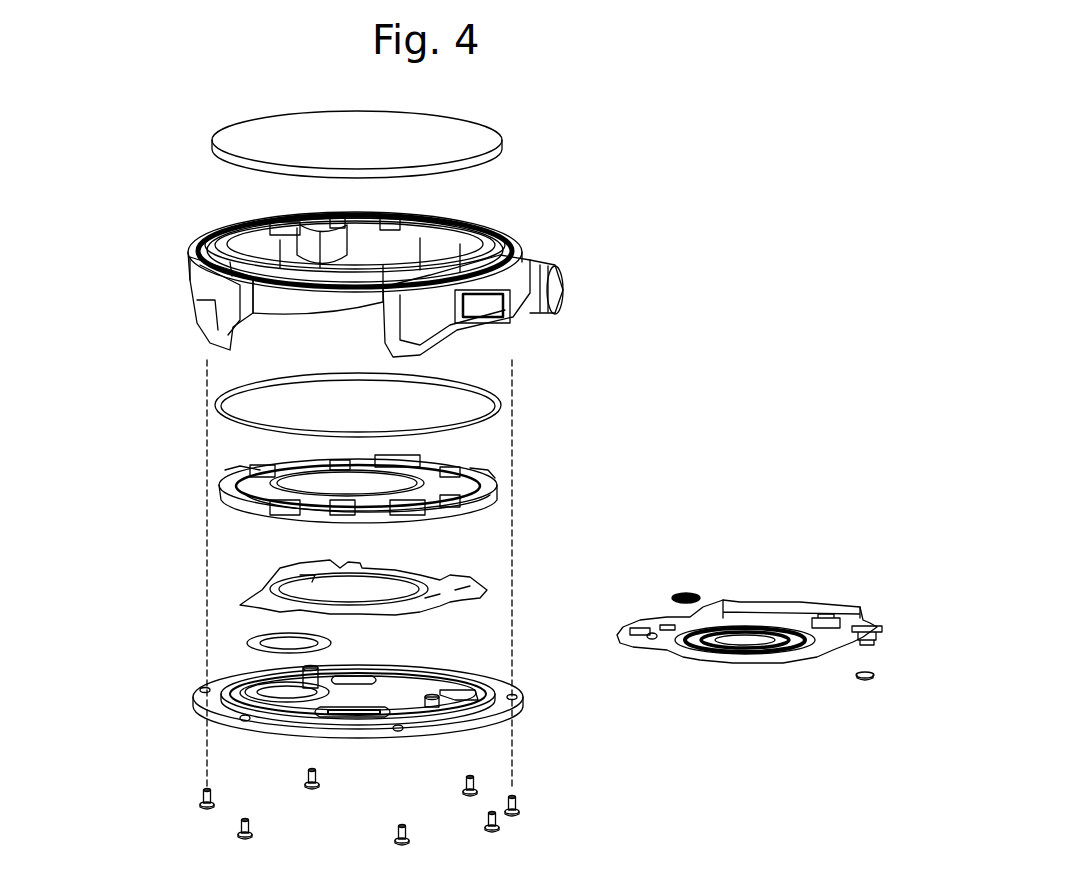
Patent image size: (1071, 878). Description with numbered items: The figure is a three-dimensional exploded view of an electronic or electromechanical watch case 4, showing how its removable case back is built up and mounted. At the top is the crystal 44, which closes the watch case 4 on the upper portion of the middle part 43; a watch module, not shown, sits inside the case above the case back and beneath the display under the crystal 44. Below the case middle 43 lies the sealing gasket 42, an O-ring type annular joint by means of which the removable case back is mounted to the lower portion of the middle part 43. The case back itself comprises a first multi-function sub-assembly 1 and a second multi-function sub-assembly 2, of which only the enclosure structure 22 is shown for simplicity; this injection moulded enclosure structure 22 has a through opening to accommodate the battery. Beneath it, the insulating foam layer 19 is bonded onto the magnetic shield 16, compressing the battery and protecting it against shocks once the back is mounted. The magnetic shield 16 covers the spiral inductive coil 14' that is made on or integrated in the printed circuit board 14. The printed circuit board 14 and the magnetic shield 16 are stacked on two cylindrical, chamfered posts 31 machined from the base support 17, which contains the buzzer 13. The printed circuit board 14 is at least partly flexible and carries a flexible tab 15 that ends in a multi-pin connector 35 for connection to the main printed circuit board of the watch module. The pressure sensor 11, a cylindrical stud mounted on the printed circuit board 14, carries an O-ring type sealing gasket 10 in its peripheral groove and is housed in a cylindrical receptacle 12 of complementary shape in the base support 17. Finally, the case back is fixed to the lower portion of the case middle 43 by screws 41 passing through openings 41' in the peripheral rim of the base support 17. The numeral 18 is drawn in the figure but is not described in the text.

The first multi-function sub-assembly 1 is at (102, 712).
The second multi-function sub-assembly 2 is at (102, 531).
The watch case 4 is at (100, 184).
The O-ring type annular sealing gasket 10 is at (868, 680).
The pressure sensor 11 is at (878, 643).
The cylindrical receptacle 12 is at (505, 710).
The buzzer 13 is at (250, 641).
The printed circuit board 14 is at (742, 586).
The inductive coil 14' is at (751, 583).
The flexible tab 15 is at (833, 610).
The magnetic shield 16 is at (455, 583).
The base support 17 is at (525, 697).
The mounting hole 18 is at (227, 706).
The insulating foam layer 19 is at (300, 590).
The enclosure structure 22 is at (225, 490).
The posts 31 is at (433, 697).
The connector 35 is at (657, 603).
The screws 41 is at (413, 804).
The openings 41' is at (383, 786).
The sealing gasket 42 is at (220, 403).
The middle part 43 is at (540, 253).
The crystal 44 is at (470, 133).